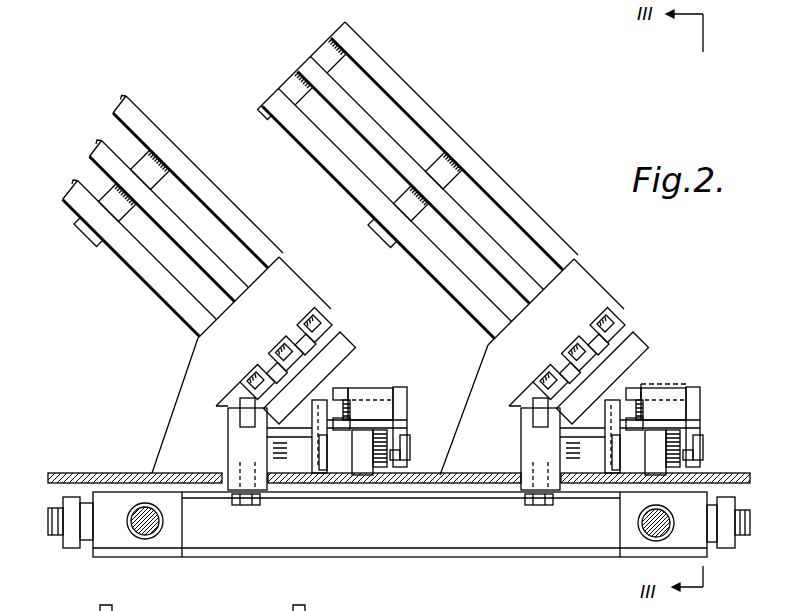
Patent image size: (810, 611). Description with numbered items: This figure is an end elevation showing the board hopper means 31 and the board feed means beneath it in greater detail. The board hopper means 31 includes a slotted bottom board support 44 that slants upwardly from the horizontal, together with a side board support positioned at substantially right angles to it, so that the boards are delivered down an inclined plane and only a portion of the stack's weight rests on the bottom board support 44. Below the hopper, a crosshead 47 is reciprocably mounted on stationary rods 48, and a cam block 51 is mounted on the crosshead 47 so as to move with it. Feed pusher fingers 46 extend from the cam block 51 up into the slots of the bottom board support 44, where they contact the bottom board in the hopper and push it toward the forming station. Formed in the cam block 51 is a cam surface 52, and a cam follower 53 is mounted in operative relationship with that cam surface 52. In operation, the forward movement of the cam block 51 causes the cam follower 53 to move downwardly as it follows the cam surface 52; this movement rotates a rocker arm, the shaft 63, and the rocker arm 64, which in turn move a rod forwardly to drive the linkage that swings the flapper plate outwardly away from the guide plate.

The board hopper means 31 is at (448, 103).
The slotted bottom board support 44 is at (340, 329).
The feed pusher fingers 46 is at (278, 325).
The crosshead 47 is at (519, 557).
The stationary rods 48 is at (149, 533).
The cam block 51 is at (316, 472).
The cam surface 52 is at (332, 463).
The cam follower 53 is at (336, 402).
The shaft 63 is at (676, 393).
The rocker arm 64 is at (405, 420).